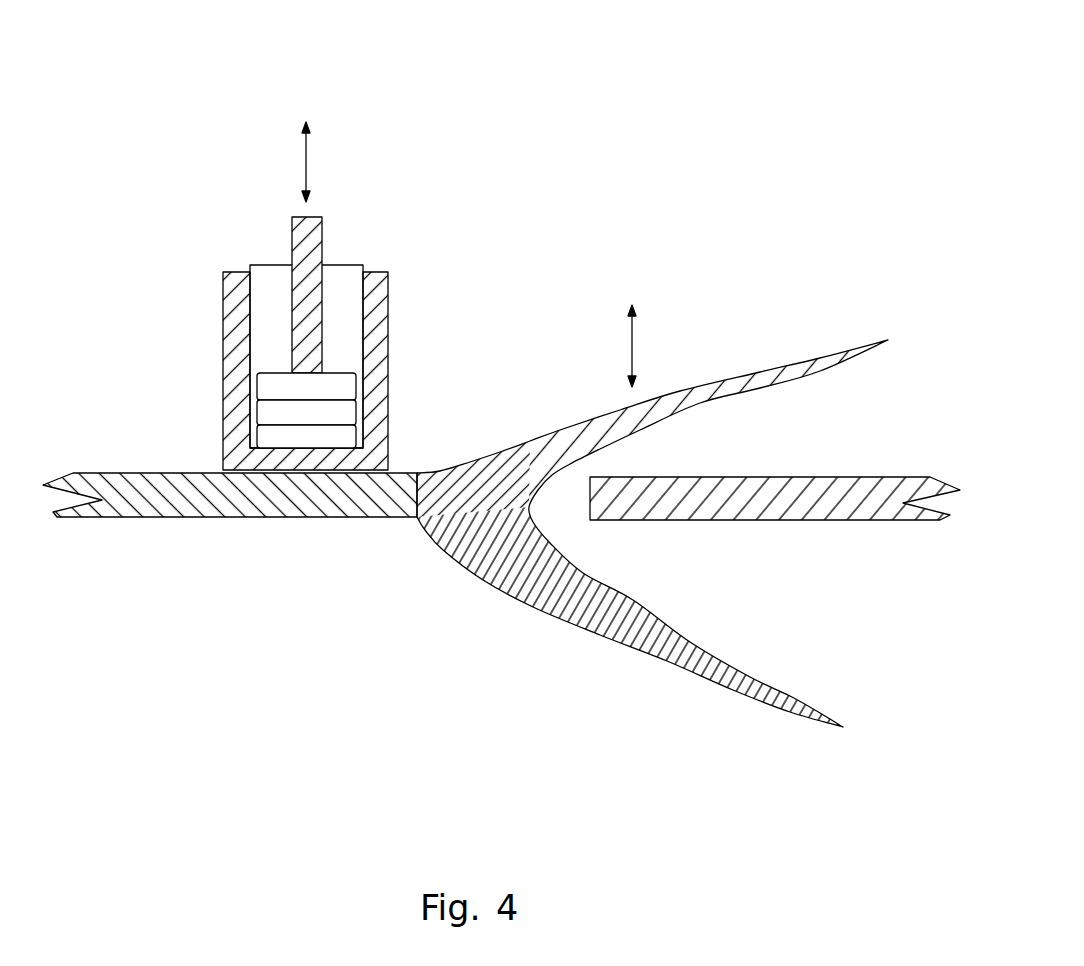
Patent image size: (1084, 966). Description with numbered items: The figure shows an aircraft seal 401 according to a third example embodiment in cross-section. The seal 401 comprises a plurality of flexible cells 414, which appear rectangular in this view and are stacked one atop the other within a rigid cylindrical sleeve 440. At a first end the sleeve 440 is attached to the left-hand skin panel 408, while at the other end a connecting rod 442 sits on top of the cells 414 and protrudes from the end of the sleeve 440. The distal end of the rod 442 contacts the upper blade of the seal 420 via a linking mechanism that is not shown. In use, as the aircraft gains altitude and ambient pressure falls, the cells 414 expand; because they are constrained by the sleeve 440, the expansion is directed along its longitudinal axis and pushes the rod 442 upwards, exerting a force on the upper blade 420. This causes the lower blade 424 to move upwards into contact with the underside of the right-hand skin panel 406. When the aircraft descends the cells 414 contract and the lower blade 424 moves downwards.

The seal 401 is at (735, 117).
The right-hand skin panel 406 is at (837, 500).
The left-hand skin panel 408 is at (233, 490).
The flexible cells 414 is at (283, 383).
The upper blade of the seal 420 is at (780, 363).
The lower blade 424 is at (660, 643).
The rigid cylindrical sleeve 440 is at (388, 315).
The connecting rod 442 is at (322, 253).